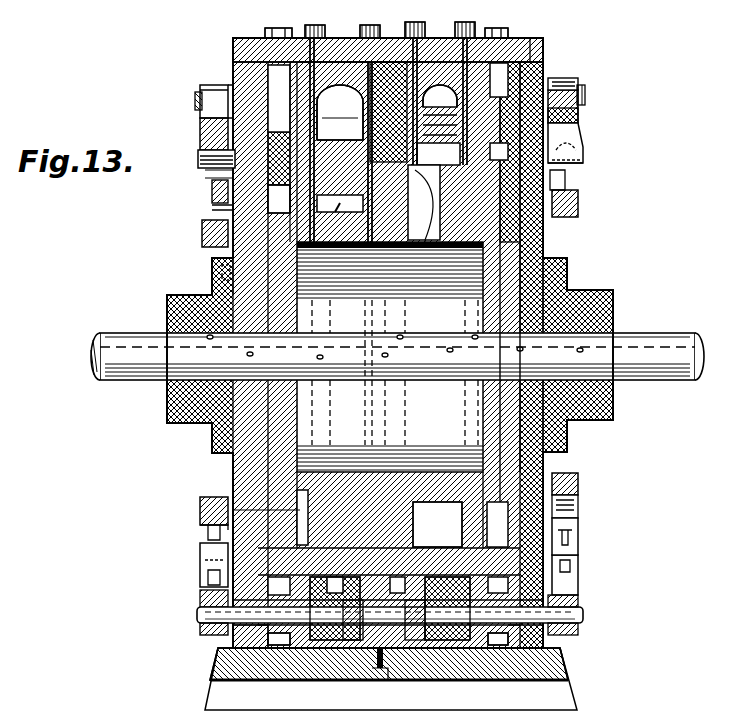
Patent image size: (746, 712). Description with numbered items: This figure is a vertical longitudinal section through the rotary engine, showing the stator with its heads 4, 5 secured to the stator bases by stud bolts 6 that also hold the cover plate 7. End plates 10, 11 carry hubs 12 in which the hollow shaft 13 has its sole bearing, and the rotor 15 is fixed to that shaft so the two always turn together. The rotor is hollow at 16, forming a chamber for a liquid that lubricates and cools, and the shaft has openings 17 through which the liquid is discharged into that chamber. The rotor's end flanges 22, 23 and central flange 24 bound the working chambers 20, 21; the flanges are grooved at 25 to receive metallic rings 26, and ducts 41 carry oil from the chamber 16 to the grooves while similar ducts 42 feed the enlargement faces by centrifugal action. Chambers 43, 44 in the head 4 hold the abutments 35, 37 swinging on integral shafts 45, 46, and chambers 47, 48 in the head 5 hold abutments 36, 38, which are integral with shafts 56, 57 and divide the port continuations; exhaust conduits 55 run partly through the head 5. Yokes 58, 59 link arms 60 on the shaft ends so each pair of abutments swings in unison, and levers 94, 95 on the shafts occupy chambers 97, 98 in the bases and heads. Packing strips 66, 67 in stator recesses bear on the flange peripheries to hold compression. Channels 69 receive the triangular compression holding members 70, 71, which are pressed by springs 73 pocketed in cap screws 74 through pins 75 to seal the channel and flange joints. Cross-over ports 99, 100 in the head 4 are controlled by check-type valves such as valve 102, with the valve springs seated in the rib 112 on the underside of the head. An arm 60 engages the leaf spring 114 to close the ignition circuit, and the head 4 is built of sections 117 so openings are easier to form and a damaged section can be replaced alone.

The head 4 is at (535, 85).
The head 5 is at (228, 613).
The stud bolts 6 is at (276, 30).
The cover plate 7 is at (515, 38).
The end plate 10 is at (242, 472).
The end plate 11 is at (545, 464).
The hubs 12 is at (183, 297).
The hollow shaft 13 is at (647, 333).
The rotor 15 is at (500, 264).
The chamber 16 is at (500, 291).
The openings 17 is at (395, 381).
The working chamber 20 is at (441, 457).
The working chamber 21 is at (205, 230).
The end flange 22 is at (553, 523).
The end flange 23 is at (230, 200).
The central flange 24 is at (426, 505).
The ring grooves 25 is at (578, 198).
The metallic rings 26 is at (230, 182).
The abutment 35 is at (340, 112).
The abutment 36 is at (338, 585).
The abutment 37 is at (441, 276).
The abutment 38 is at (412, 643).
The ducts 41 is at (300, 511).
The ducts 42 is at (360, 381).
The chamber 43 is at (346, 60).
The chamber 44 is at (452, 34).
The integral shaft 45 is at (199, 95).
The integral shaft 46 is at (585, 100).
The chamber 47 is at (347, 643).
The chamber 48 is at (440, 648).
The conduits 55 is at (322, 642).
The shaft 56 is at (237, 636).
The shaft 57 is at (585, 615).
The yoke 58 is at (204, 247).
The yoke 59 is at (578, 210).
The arms 60 is at (205, 101).
The packing strip 66 is at (233, 565).
The packing strip 67 is at (556, 563).
The channels 69 is at (210, 130).
The compression holding member 70 is at (298, 121).
The compression holding member 71 is at (218, 100).
The springs 73 is at (310, 30).
The cap screws 74 is at (314, 30).
The pins 75 is at (268, 48).
The lever 94 is at (212, 190).
The lever 95 is at (262, 634).
The chamber 97 is at (227, 214).
The chamber 98 is at (285, 636).
The cross-over port 99 is at (352, 100).
The cross-over port 100 is at (368, 131).
The valve 102 is at (430, 46).
The rib 112 is at (427, 215).
The leaf spring 114 is at (200, 156).
The sections 117 is at (543, 52).